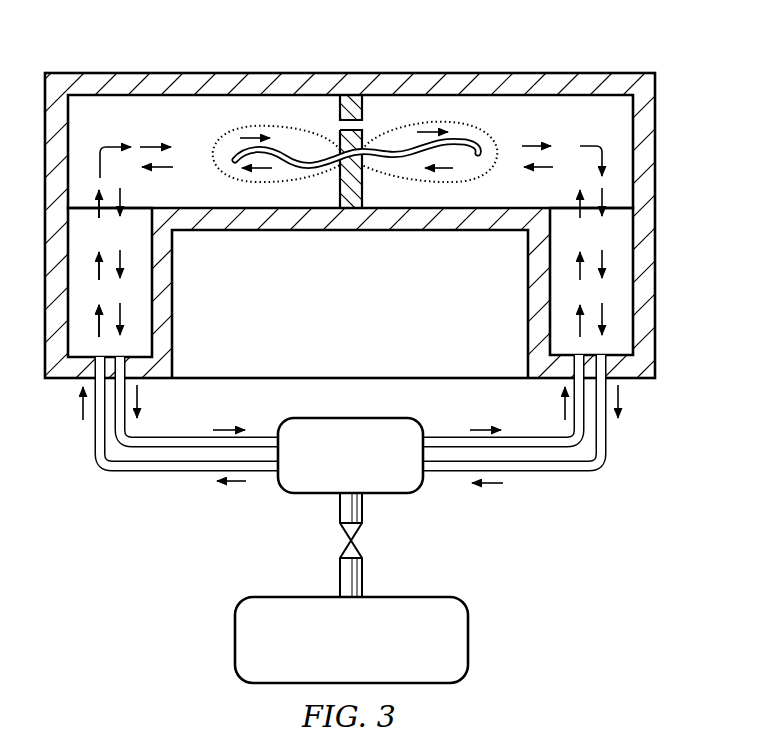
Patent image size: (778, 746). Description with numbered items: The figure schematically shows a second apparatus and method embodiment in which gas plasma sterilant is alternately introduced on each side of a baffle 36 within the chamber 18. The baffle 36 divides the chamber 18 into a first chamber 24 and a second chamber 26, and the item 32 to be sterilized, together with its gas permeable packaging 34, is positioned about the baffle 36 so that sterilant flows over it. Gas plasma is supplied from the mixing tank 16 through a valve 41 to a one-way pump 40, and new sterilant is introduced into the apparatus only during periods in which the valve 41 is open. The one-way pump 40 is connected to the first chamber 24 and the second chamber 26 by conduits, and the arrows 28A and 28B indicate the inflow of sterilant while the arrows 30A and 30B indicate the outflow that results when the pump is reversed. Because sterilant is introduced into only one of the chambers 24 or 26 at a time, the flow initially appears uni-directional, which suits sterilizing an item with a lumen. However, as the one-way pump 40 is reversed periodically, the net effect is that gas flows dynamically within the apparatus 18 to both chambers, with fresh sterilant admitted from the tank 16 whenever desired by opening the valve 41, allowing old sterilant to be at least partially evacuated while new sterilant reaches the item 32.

The chamber 18 is at (253, 71).
The first chamber 24 is at (112, 134).
The second chamber 26 is at (614, 133).
The baffle 36 is at (340, 141).
The gas permeable packaging 34 is at (233, 128).
The item 32 is at (464, 140).
The inflow arrow 28A is at (232, 486).
The outflow arrow 30A is at (225, 430).
The inflow arrow 28B is at (478, 428).
The outflow arrow 30B is at (492, 484).
The one-way pump 40 is at (346, 418).
The valve 41 is at (342, 533).
The mixing tank 16 is at (236, 640).